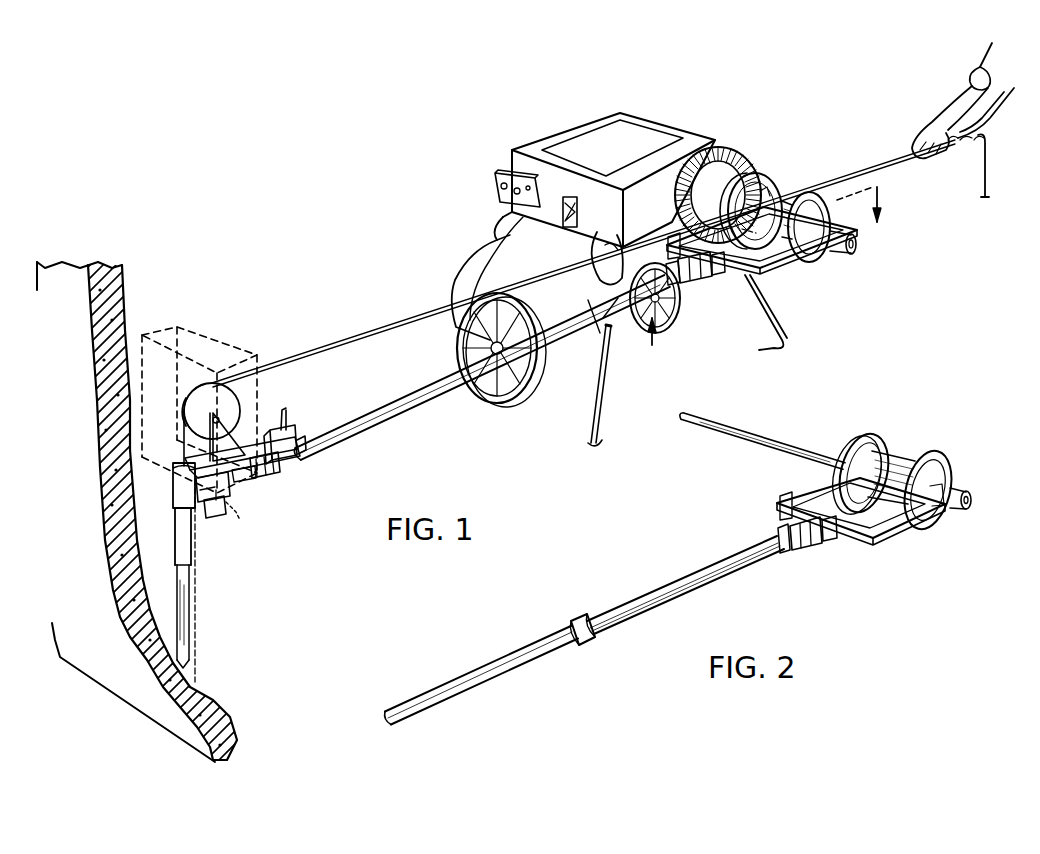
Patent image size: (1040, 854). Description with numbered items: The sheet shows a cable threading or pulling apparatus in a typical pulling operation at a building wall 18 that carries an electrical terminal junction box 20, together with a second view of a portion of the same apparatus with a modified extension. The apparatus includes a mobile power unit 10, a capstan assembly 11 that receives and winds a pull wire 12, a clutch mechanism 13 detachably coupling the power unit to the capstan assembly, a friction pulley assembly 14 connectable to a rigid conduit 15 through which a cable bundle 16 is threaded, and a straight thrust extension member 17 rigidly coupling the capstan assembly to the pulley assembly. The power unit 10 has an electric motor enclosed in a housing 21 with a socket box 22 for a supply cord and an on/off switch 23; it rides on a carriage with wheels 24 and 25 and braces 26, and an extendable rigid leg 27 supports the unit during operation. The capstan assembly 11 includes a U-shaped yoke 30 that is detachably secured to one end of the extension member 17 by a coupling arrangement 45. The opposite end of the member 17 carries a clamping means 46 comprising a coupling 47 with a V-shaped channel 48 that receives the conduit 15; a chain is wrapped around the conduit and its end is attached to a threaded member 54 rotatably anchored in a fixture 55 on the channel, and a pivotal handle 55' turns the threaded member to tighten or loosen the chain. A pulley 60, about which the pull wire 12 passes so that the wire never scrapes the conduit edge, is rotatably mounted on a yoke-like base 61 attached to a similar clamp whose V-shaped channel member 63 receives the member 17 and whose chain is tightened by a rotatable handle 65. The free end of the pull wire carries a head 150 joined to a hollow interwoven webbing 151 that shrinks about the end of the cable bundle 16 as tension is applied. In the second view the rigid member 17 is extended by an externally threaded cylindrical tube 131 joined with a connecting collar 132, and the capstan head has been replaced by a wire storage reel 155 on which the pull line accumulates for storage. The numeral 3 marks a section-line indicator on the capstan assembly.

In FIG. 1, the mobile power unit 10 is at (565, 83).
In FIG. 1, the capstan assembly 11 is at (804, 158).
In FIG. 1, the pull wire 12 is at (850, 176).
In FIG. 2, the pull wire 12 is at (762, 441).
In FIG. 1, the clutch mechanism 13 is at (758, 165).
In FIG. 1, the friction pulley assembly 14 is at (282, 401).
In FIG. 1, the rigid conduit 15 is at (194, 546).
In FIG. 1, the cable bundle 16 is at (199, 648).
In FIG. 1, the thrust extension member 17 is at (428, 402).
In FIG. 2, the thrust extension member 17 is at (634, 592).
In FIG. 1, the wall 18 is at (80, 266).
In FIG. 1, the electrical terminal junction box 20 is at (188, 326).
In FIG. 1, the housing 21 is at (530, 140).
In FIG. 1, the socket box 22 is at (493, 186).
In FIG. 1, the on/off switch 23 is at (570, 230).
In FIG. 1, the wheel 24 is at (532, 392).
In FIG. 1, the wheel 25 is at (676, 310).
In FIG. 1, the braces 26 is at (462, 272).
In FIG. 1, the leg 27 is at (605, 405).
In FIG. 1, the section line 3 is at (765, 279).
In FIG. 1, the U-shaped yoke 30 is at (784, 278).
In FIG. 2, the U-shaped yoke 30 is at (892, 536).
In FIG. 1, the coupling arrangement 45 is at (716, 284).
In FIG. 2, the coupling arrangement 45 is at (816, 545).
In FIG. 1, the clamping means 46 is at (240, 498).
In FIG. 1, the coupling 47 is at (280, 466).
In FIG. 1, the V-shaped channel 48 is at (173, 482).
In FIG. 1, the threaded member 54 is at (210, 512).
In FIG. 1, the fixture 55 is at (245, 519).
In FIG. 1, the pivotal handle 55' is at (264, 481).
In FIG. 1, the pulley 60 is at (236, 398).
In FIG. 1, the yoke-like base 61 is at (228, 432).
In FIG. 1, the V-shaped channel member 63 is at (306, 446).
In FIG. 1, the rotatable handle 65 is at (292, 418).
In FIG. 2, the cylindrical tube 131 is at (510, 672).
In FIG. 2, the connecting collar 132 is at (580, 642).
In FIG. 1, the head 150 is at (195, 612).
In FIG. 1, the webbing 151 is at (194, 655).
In FIG. 2, the wire storage reel 155 is at (892, 460).